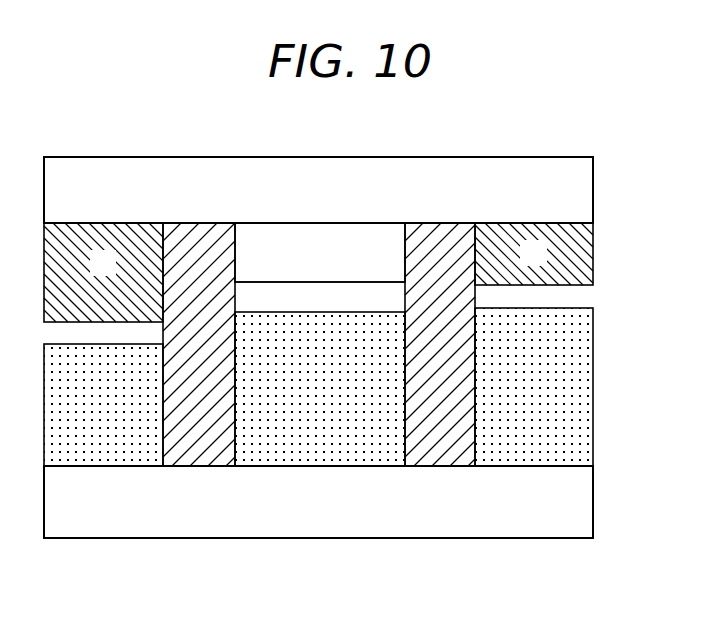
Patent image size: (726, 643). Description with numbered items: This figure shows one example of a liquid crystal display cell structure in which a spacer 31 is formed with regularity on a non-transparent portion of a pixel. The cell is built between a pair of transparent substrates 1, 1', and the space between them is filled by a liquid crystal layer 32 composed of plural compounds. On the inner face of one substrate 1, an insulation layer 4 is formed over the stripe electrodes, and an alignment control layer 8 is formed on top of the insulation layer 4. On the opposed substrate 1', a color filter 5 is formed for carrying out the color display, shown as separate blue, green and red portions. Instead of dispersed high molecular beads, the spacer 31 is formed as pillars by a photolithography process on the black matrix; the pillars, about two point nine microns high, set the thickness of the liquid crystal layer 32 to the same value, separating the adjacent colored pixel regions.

The transparent substrate 1' is at (348, 177).
The transparent substrate 1 is at (343, 501).
The color filter 5 is at (588, 238).
The insulation layer 4 is at (279, 297).
The alignment control layer 8 is at (279, 297).
The liquid crystal layer 32 is at (585, 367).
The spacer 31 is at (202, 452).